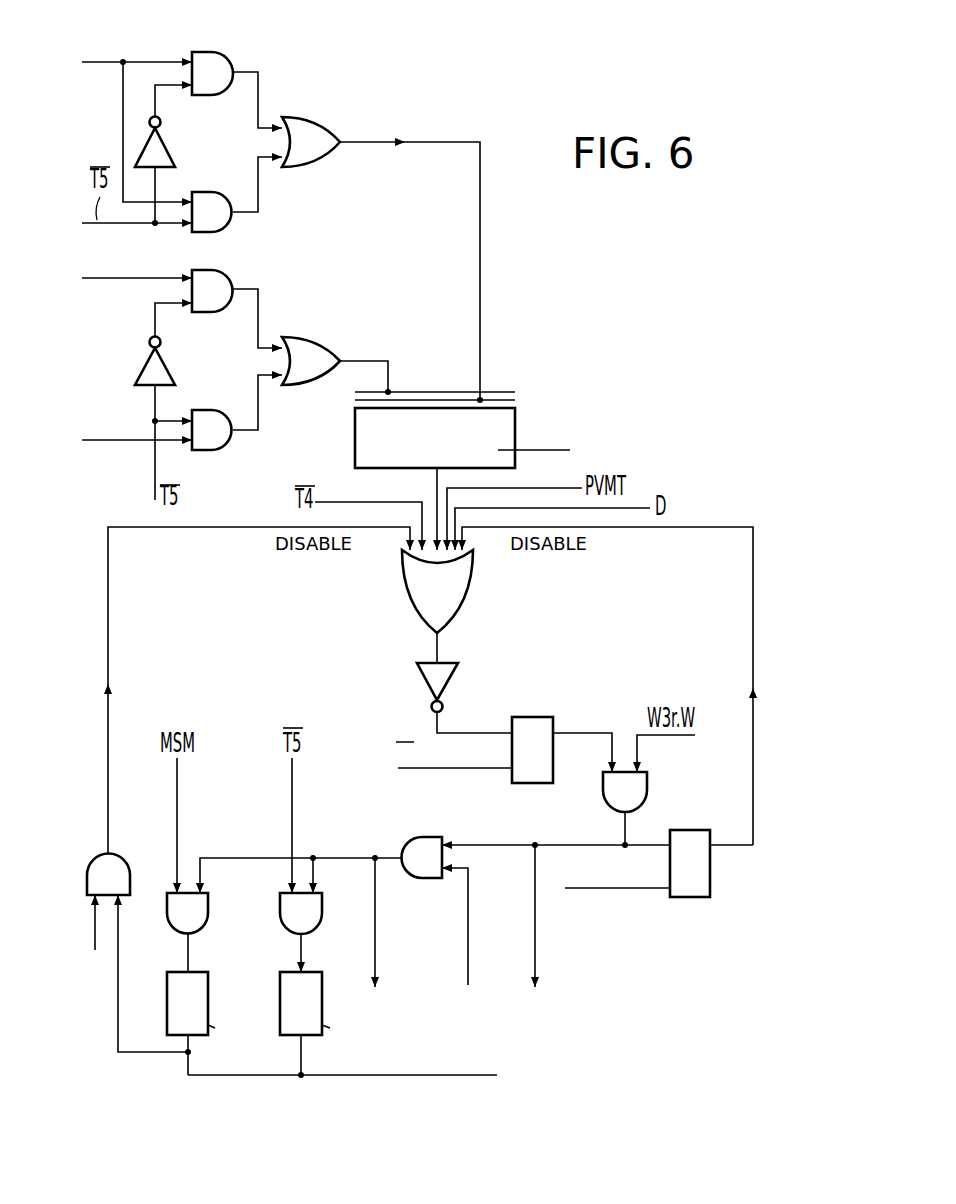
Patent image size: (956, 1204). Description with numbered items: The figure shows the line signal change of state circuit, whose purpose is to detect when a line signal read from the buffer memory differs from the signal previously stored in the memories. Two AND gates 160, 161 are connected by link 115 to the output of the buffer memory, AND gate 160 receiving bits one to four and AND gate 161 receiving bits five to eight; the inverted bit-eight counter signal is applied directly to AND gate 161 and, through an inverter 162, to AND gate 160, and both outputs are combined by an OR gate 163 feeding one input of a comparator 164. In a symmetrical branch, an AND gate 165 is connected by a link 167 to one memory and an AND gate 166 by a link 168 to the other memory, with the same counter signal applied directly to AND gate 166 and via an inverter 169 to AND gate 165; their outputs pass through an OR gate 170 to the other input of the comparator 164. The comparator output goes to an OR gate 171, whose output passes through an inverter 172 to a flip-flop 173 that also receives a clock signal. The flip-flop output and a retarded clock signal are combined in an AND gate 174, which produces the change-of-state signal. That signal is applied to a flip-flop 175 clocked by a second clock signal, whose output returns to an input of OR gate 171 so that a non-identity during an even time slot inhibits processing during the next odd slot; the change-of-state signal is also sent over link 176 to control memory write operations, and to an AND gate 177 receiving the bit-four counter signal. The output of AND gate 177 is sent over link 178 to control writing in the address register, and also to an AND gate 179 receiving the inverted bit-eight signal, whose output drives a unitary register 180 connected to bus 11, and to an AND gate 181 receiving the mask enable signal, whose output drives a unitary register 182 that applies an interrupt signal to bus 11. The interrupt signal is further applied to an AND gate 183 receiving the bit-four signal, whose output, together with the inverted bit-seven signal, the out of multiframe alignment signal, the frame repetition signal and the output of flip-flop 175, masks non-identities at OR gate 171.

The bus 11 is at (447, 1075).
The link 115 is at (100, 60).
The AND gate 160 is at (213, 67).
The AND gate 161 is at (213, 207).
The inverter 162 is at (158, 147).
The OR gate 163 is at (314, 135).
The comparator 164 is at (493, 435).
The AND gate 165 is at (213, 298).
The AND gate 166 is at (213, 433).
The link 167 is at (102, 277).
The link 168 is at (99, 438).
The inverter 169 is at (158, 363).
The OR gate 170 is at (313, 360).
The OR gate 171 is at (417, 593).
The inverter 172 is at (430, 680).
The flip-flop 173 is at (532, 730).
The AND gate 174 is at (635, 790).
The flip-flop 175 is at (690, 890).
The link 176 is at (540, 937).
The AND gate 177 is at (420, 845).
The link 178 is at (376, 945).
The AND gate 179 is at (312, 912).
The unitary register 180 is at (310, 1000).
The AND gate 181 is at (200, 912).
The unitary register 182 is at (200, 1000).
The AND gate 183 is at (115, 870).